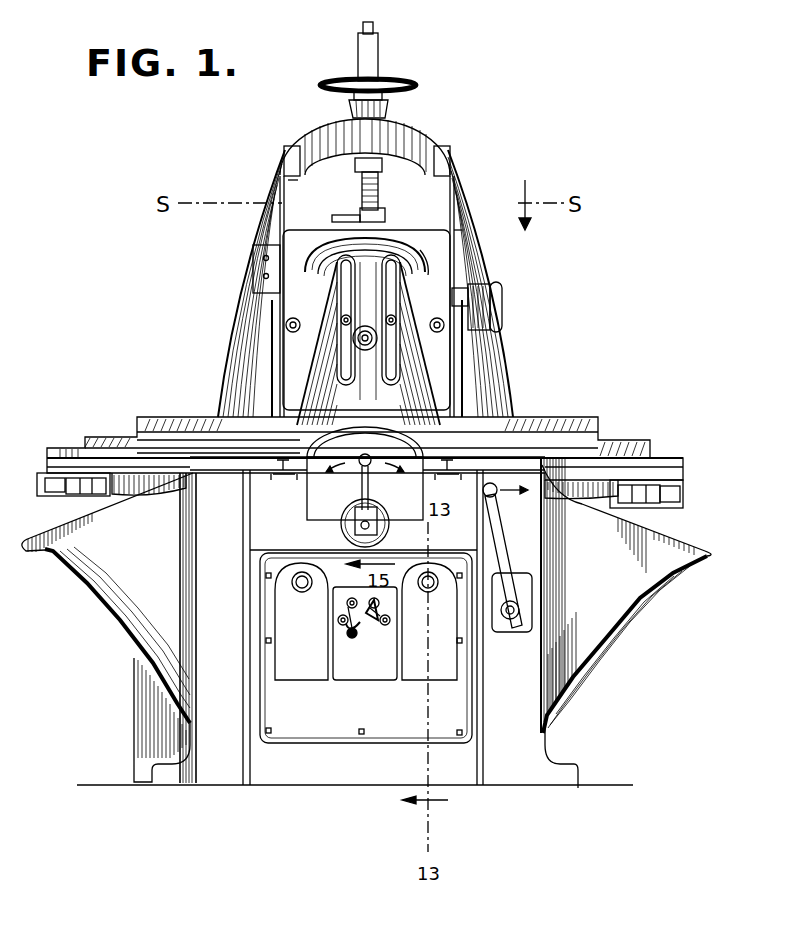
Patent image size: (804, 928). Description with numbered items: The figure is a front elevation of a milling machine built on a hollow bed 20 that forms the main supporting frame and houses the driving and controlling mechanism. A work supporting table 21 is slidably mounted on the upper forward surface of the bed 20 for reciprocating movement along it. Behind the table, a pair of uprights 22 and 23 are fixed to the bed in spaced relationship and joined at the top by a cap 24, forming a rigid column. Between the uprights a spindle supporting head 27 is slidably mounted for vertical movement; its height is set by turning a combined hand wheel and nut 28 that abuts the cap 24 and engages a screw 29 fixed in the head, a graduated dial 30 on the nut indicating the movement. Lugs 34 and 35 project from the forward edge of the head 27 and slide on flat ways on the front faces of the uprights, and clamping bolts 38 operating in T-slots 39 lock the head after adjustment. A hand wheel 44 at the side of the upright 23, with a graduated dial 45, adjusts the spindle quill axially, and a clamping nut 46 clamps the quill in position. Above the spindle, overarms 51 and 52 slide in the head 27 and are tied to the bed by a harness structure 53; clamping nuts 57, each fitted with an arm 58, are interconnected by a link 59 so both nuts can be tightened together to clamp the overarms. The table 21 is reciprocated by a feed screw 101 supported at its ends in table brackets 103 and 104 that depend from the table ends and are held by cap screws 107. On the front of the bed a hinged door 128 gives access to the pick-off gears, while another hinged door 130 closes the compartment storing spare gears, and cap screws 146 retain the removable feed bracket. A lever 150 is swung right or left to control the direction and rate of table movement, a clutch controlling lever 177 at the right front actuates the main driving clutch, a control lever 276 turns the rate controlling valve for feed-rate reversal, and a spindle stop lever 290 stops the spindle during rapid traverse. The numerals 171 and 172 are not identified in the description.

The bed 20 is at (530, 750).
The work supporting table 21 is at (580, 418).
The upright 22 is at (272, 195).
The upright 23 is at (468, 195).
The cap 24 is at (410, 138).
The spindle supporting head 27 is at (288, 368).
The combined hand wheel and nut 28 is at (384, 86).
The screw 29 is at (379, 202).
The graduated dial 30 is at (350, 112).
The lug 34 is at (280, 322).
The lug 35 is at (465, 265).
The clamping bolts 38 is at (293, 316).
The T-slots 39 is at (290, 215).
The hand wheel 44 is at (502, 308).
The graduated dial 45 is at (490, 300).
The clamping nut 46 is at (466, 296).
The overarm 51 is at (332, 262).
The overarm 52 is at (405, 265).
The harness structure 53 is at (420, 378).
The clamping nuts 57 is at (358, 205).
The arm 58 is at (386, 222).
The link 59 is at (338, 220).
The feed screw 101 is at (128, 492).
The table bracket 103 is at (86, 497).
The table bracket 104 is at (655, 508).
The cap screws 107 is at (64, 497).
The hinged door 128 is at (428, 664).
The hinged door 130 is at (278, 598).
The cap screws 146 is at (358, 731).
The lever 150 is at (362, 490).
The table slide 171 is at (186, 448).
The table slide 172 is at (156, 438).
The clutch controlling lever 177 is at (486, 490).
The control lever 276 is at (388, 609).
The spindle stop lever 290 is at (348, 632).